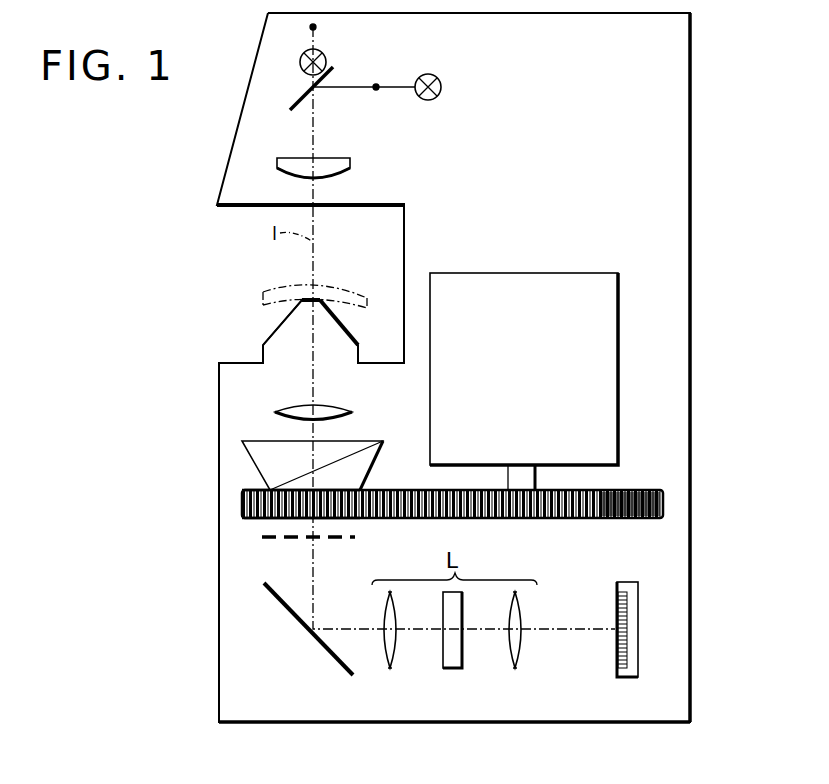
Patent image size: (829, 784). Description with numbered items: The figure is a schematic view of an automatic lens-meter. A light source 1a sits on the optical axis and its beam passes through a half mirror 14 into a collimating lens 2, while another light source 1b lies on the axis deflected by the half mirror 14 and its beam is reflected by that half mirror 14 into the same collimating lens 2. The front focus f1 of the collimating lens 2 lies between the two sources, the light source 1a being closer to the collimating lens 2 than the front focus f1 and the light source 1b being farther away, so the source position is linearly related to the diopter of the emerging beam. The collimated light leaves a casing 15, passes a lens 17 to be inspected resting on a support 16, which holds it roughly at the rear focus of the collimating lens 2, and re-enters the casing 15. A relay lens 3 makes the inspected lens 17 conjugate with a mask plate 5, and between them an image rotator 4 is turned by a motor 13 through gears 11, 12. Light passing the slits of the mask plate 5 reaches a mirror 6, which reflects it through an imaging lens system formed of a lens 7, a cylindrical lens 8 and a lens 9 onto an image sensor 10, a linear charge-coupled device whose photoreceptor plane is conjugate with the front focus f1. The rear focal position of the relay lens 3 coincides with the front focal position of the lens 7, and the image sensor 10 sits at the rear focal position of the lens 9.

The light source 1a is at (326, 53).
The light source 1b is at (428, 74).
The front focus f1 is at (310, 27).
The collimating lens 2 is at (278, 163).
The relay lens 3 is at (275, 411).
The image rotator 4 is at (262, 460).
The mask plate 5 is at (270, 538).
The mirror 6 is at (278, 598).
The lens 7 is at (393, 670).
The cylindrical lens 8 is at (452, 670).
The lens 9 is at (512, 670).
The image sensor 10 is at (627, 677).
The gear 11 is at (345, 518).
The gear 12 is at (565, 518).
The motor 13 is at (543, 273).
The half mirror 14 is at (297, 98).
The casing 15 is at (690, 198).
The support 16 is at (295, 332).
The lens to be inspected 17 is at (263, 295).